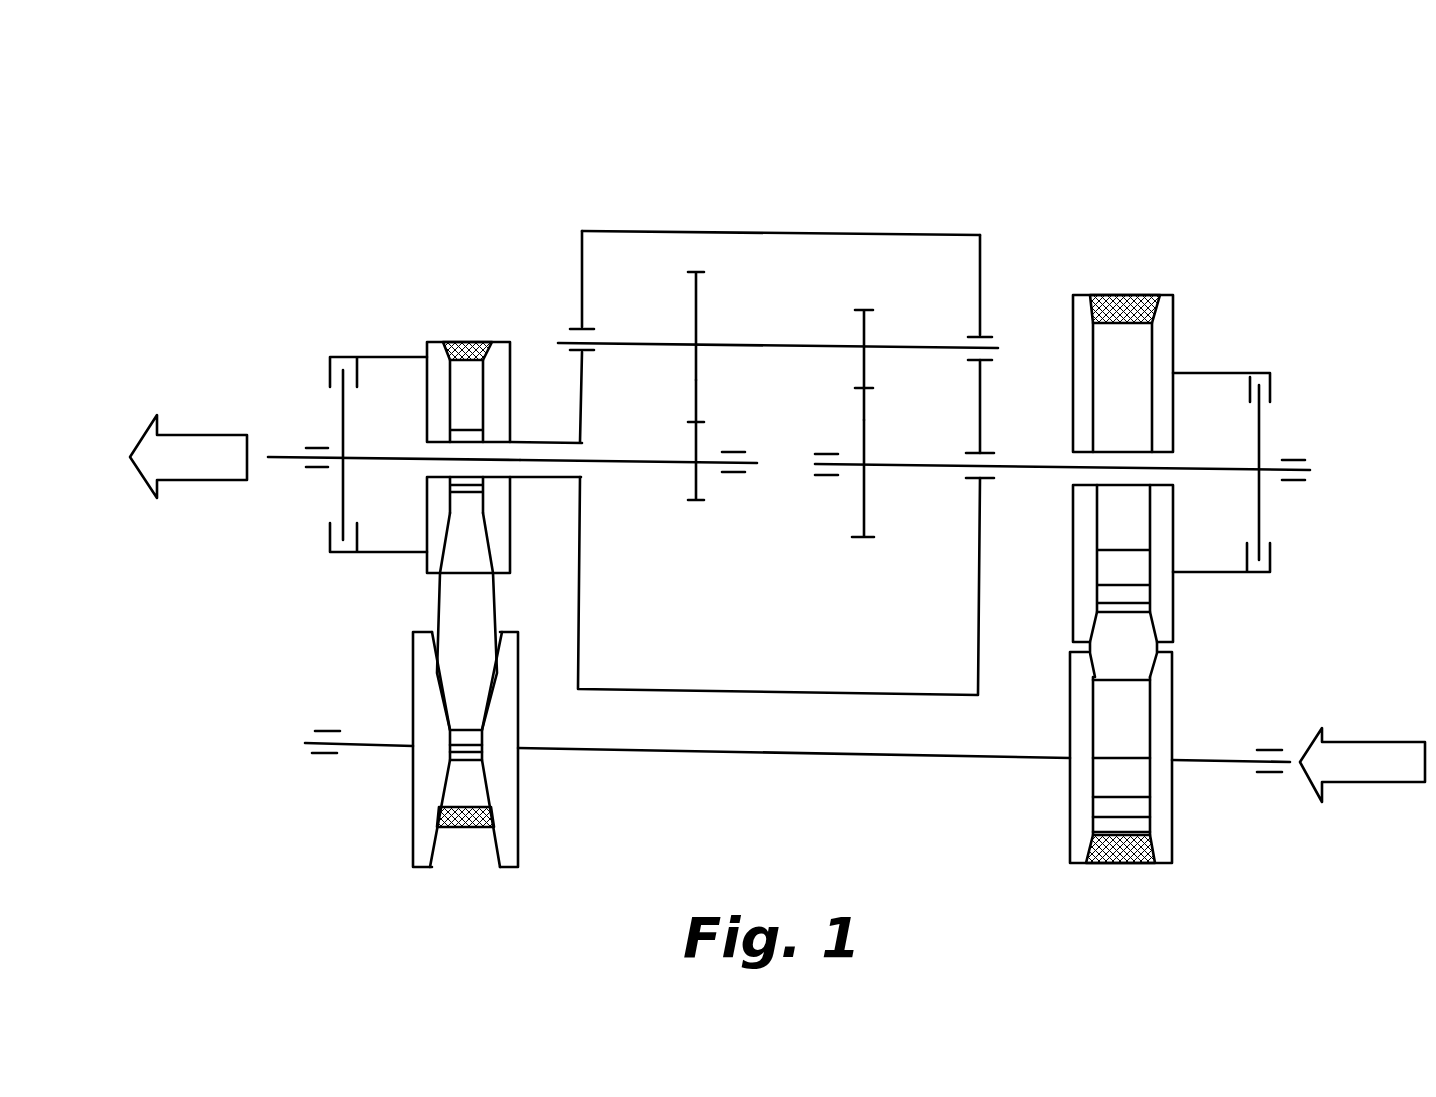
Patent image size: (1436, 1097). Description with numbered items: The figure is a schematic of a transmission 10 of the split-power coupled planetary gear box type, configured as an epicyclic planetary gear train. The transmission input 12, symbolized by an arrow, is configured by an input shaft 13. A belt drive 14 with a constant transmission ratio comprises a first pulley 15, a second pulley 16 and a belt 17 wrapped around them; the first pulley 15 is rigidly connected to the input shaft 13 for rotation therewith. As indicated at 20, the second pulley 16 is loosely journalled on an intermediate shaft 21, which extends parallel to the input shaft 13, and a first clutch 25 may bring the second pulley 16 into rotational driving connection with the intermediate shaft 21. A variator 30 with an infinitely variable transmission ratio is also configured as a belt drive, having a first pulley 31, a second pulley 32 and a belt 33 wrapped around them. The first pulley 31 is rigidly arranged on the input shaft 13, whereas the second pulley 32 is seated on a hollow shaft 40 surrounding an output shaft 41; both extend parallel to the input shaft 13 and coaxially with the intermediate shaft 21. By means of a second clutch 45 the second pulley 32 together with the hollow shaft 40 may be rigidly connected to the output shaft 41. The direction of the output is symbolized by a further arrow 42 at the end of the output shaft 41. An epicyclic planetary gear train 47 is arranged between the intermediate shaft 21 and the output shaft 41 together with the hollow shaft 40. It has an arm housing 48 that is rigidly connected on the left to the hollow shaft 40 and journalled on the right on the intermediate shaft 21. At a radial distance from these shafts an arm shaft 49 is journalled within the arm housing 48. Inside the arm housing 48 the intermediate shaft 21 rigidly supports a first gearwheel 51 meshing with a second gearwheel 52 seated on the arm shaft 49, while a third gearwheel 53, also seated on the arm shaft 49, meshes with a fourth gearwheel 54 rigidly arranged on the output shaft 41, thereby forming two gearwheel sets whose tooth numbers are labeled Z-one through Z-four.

The transmission 10 is at (910, 413).
The transmission input 12 is at (1376, 770).
The input shaft 13 is at (368, 743).
The belt drive 14 is at (1113, 598).
The first pulley 15 is at (1162, 693).
The second pulley 16 is at (1167, 345).
The belt 17 is at (1135, 866).
The loose journalling 20 is at (1075, 452).
The intermediate shaft 21 is at (1022, 482).
The first clutch 25 is at (1283, 388).
The variator 30 is at (510, 570).
The first pulley 31 is at (511, 840).
The second pulley 32 is at (515, 340).
The belt 33 is at (483, 596).
The hollow shaft 40 is at (540, 442).
The output shaft 41 is at (621, 462).
The output direction arrow 42 is at (197, 465).
The second clutch 45 is at (317, 353).
The epicyclic planetary gear train 47 is at (690, 222).
The arm housing 48 is at (818, 233).
The arm shaft 49 is at (769, 343).
The first gearwheel 51 is at (866, 490).
The second gearwheel 52 is at (866, 335).
The third gearwheel 53 is at (695, 310).
The fourth gearwheel 54 is at (694, 485).